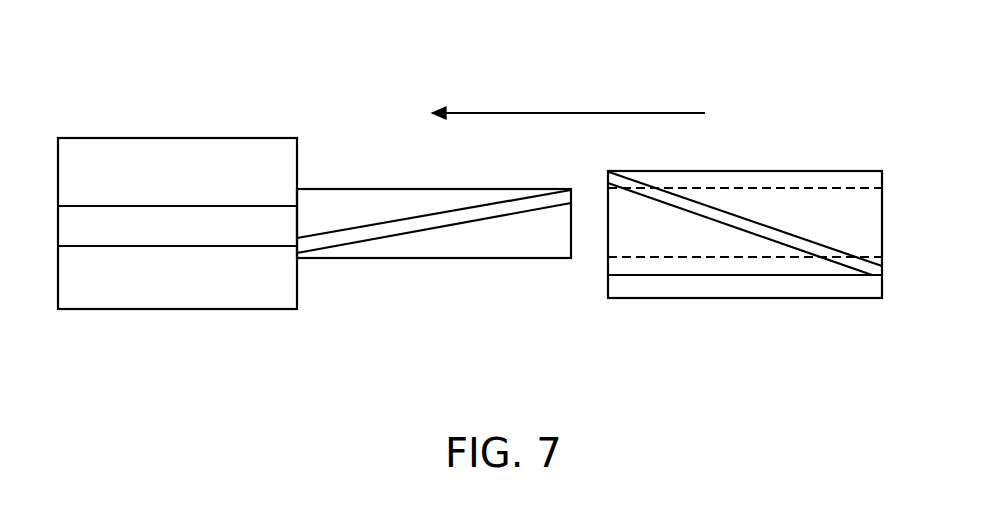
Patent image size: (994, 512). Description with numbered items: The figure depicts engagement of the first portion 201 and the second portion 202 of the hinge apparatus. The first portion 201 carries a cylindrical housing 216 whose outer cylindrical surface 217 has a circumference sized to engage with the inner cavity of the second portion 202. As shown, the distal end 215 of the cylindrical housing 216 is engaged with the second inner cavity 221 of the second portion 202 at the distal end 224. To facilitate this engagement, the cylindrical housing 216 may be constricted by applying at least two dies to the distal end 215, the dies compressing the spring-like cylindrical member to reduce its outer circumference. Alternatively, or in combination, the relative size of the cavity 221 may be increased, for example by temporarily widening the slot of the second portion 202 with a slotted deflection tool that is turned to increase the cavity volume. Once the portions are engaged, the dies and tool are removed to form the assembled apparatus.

The first portion 201 is at (146, 108).
The second portion 202 is at (772, 108).
The second distal end 215 is at (569, 259).
The cylindrical housing 216 is at (369, 178).
The outer cylindrical surface 217 is at (353, 219).
The second inner cavity 221 is at (658, 251).
The distal end 224 is at (609, 172).